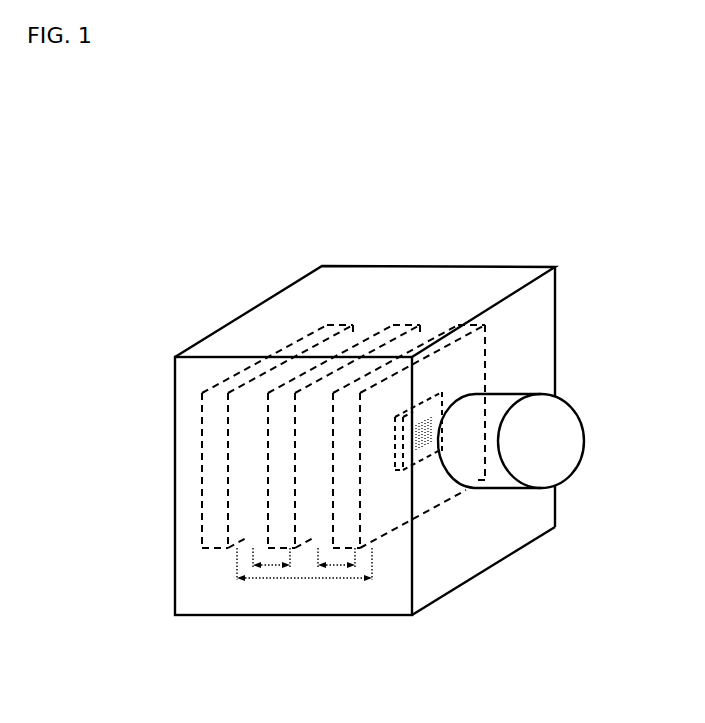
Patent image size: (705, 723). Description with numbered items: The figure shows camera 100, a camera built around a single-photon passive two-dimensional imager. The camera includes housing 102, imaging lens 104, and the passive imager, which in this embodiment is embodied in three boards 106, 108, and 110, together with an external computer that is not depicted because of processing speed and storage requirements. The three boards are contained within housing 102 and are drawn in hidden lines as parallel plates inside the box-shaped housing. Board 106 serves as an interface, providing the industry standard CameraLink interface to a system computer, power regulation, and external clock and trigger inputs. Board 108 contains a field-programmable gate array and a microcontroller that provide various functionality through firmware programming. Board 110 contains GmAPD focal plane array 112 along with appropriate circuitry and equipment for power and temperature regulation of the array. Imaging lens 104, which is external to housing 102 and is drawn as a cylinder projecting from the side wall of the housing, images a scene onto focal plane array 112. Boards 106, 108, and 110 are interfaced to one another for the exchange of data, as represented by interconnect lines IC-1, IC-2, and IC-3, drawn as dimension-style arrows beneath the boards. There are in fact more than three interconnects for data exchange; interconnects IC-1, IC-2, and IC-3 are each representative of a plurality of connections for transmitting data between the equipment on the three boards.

The camera 100 is at (160, 215).
The housing 102 is at (530, 265).
The imaging lens 104 is at (580, 413).
The board 106 is at (330, 322).
The board 108 is at (400, 322).
The board 110 is at (383, 497).
The GmAPD focal plane array 112 is at (422, 460).
The interconnect line IC-1 is at (337, 566).
The interconnect line IC-2 is at (318, 580).
The interconnect line IC-3 is at (273, 566).